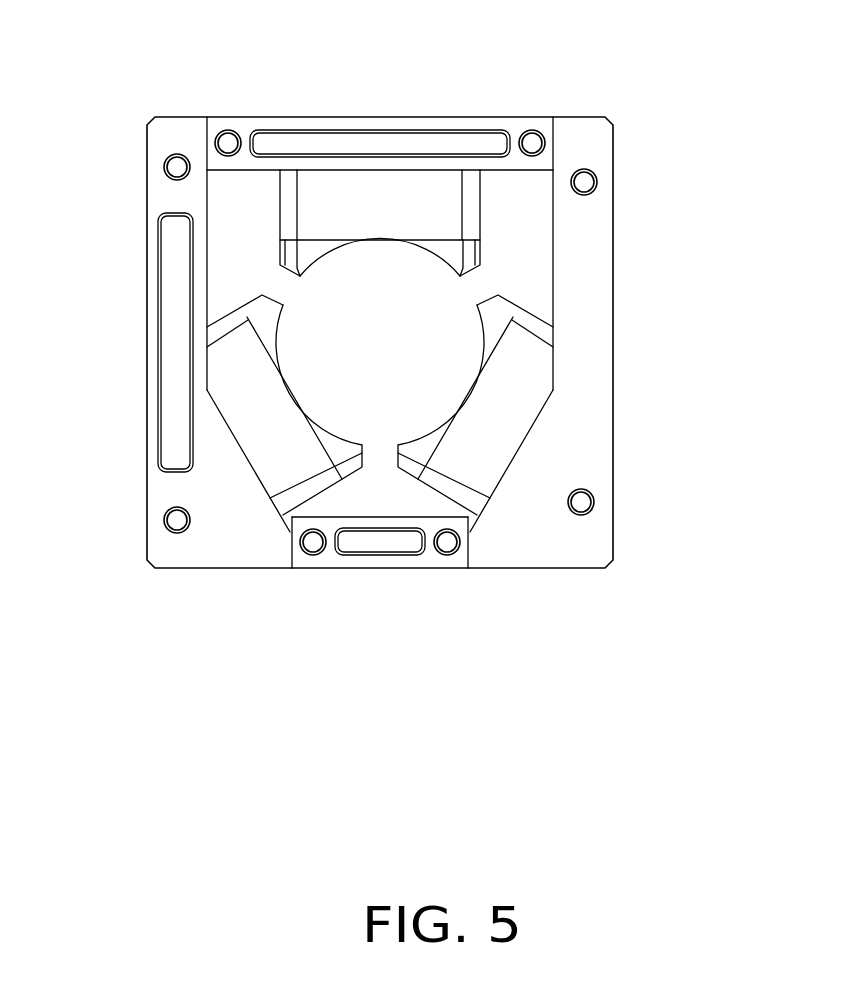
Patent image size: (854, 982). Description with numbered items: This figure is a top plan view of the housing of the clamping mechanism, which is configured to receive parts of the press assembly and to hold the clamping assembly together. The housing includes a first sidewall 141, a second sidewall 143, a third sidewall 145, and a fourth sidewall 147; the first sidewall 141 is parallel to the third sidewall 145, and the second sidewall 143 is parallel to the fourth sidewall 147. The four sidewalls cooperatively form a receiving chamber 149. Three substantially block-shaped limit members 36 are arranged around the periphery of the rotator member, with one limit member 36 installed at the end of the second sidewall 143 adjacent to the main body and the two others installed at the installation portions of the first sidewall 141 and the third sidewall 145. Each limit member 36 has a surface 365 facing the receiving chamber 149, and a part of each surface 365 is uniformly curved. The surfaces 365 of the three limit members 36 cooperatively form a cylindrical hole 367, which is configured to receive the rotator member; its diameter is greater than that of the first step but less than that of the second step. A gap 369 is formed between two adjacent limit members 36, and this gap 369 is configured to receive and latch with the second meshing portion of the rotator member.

The first sidewall 141 is at (598, 205).
The second sidewall 143 is at (303, 123).
The third sidewall 145 is at (173, 195).
The fourth sidewall 147 is at (425, 556).
The receiving chamber 149 is at (505, 217).
The limit member 36 is at (388, 197).
The surface 365 is at (440, 232).
The cylindrical hole 367 is at (413, 353).
The gap 369 is at (473, 288).